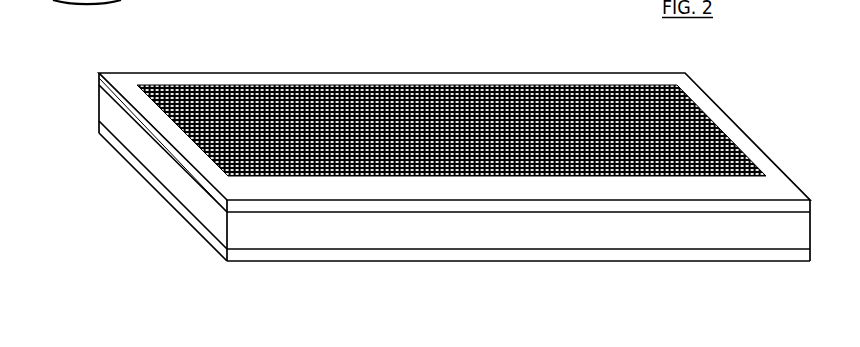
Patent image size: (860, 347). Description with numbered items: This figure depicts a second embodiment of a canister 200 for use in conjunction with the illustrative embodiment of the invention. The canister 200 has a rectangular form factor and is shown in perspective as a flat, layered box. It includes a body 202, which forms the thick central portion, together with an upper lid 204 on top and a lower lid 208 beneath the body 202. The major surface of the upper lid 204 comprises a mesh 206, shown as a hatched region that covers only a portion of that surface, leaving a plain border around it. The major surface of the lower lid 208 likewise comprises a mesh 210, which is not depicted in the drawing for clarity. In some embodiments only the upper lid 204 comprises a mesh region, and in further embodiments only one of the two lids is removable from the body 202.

The canister 200 is at (748, 67).
The body 202 is at (457, 232).
The upper lid 204 is at (110, 100).
The mesh 206 is at (447, 90).
The lower lid 208 is at (153, 185).
The mesh 210 is at (202, 267).